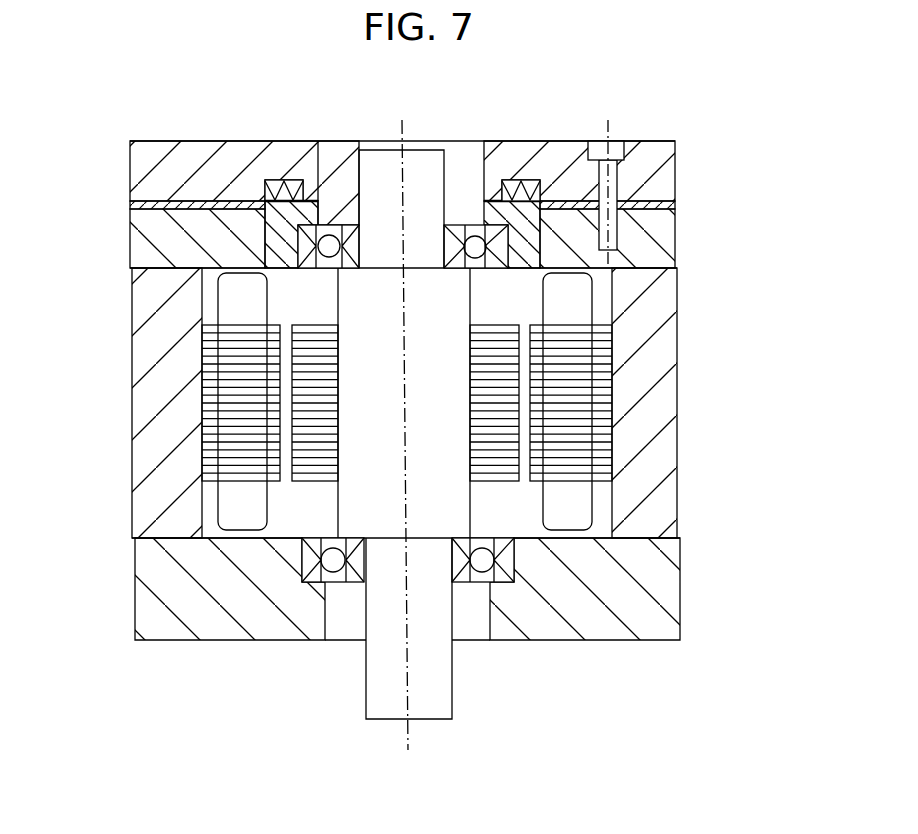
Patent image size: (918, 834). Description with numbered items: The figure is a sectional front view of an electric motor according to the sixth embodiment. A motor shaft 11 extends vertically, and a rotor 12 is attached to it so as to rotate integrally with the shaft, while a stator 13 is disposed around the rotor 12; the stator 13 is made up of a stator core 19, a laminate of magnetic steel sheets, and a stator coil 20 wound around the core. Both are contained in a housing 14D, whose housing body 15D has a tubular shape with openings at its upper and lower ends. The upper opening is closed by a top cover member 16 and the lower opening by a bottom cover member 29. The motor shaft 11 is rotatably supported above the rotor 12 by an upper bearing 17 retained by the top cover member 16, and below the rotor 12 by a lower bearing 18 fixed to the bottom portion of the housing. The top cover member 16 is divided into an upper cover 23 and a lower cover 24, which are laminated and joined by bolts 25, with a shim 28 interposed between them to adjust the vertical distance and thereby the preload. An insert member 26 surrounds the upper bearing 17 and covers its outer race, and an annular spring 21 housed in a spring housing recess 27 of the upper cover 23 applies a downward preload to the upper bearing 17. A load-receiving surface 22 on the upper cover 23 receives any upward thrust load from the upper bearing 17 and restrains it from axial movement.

The motor shaft 11 is at (380, 150).
The rotor 12 is at (490, 324).
The stator 13 is at (60, 340).
The housing 14D is at (790, 182).
The housing body 15D is at (678, 390).
The top cover member 16 is at (742, 158).
The upper bearing 17 is at (332, 224).
The lower bearing 18 is at (339, 588).
The stator core 19 is at (203, 366).
The stator coil 20 is at (203, 430).
The annular spring 21 is at (513, 178).
The load-receiving surface 22 is at (484, 213).
The upper cover 23 is at (677, 178).
The lower cover 24 is at (677, 235).
The bolt 25 is at (612, 138).
The insert member 26 is at (277, 243).
The spring housing recess 27 is at (277, 202).
The shim 28 is at (199, 200).
The bottom cover member 29 is at (680, 583).